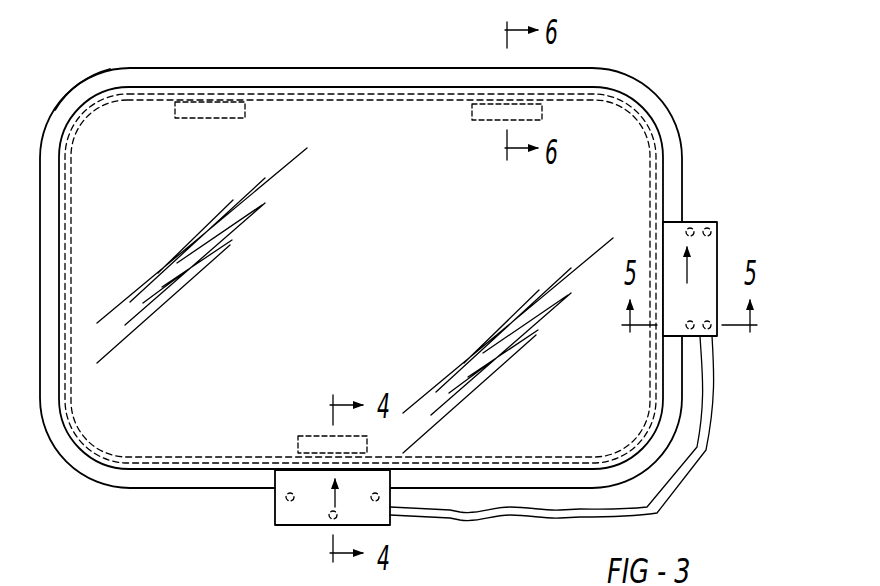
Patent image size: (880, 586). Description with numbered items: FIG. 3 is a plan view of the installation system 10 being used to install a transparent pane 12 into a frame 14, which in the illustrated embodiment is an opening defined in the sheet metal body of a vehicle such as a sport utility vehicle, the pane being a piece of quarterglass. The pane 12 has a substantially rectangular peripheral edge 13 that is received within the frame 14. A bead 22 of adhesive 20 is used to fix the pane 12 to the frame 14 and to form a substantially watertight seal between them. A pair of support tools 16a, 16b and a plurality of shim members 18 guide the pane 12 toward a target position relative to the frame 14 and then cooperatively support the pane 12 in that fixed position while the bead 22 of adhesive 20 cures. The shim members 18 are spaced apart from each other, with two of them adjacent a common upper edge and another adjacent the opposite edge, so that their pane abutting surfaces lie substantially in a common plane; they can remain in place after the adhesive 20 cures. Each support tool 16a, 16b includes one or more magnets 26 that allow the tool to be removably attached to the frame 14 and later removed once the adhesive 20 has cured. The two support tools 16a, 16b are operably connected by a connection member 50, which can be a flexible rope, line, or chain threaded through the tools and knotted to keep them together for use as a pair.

The installation system 10 is at (394, 253).
The transparent pane 12 is at (153, 403).
The peripheral edge 13 is at (386, 87).
The frame 14 is at (343, 70).
The support tool 16a is at (273, 508).
The support tool 16b is at (703, 221).
The shim member 18 is at (198, 120).
The adhesive 20 is at (97, 100).
The bead 22 is at (127, 100).
The magnet 26 is at (710, 332).
The connection member 50 is at (685, 475).